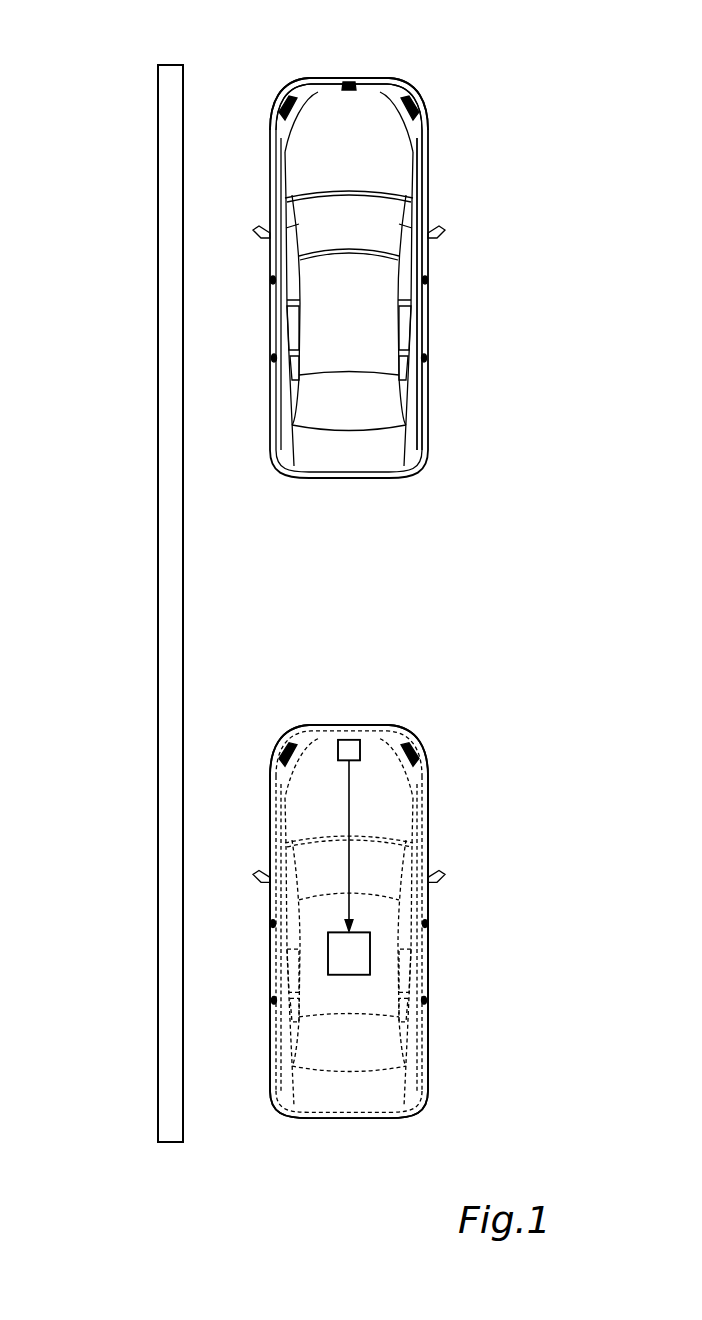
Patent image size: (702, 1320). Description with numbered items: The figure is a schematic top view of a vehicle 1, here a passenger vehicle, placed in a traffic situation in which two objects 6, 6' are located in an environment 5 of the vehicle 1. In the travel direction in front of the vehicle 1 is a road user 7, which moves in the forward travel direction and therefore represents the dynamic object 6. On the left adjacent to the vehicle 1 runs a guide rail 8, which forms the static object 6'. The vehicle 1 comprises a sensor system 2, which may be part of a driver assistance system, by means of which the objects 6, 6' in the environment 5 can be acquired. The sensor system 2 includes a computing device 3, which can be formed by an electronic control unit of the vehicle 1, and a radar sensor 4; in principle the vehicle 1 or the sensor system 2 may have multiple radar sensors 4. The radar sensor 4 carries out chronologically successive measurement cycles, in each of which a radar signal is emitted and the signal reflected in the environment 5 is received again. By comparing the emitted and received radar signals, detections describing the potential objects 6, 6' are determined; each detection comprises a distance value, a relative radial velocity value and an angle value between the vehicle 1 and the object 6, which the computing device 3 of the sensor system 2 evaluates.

The vehicle 1 is at (427, 833).
The sensor system 2 is at (302, 727).
The computing device 3 is at (360, 951).
The radar sensor 4 is at (350, 732).
The environment 5 is at (338, 528).
The dynamic object 6 is at (349, 65).
The static object 6' is at (133, 182).
The road user 7 is at (427, 272).
The guide rail 8 is at (176, 386).